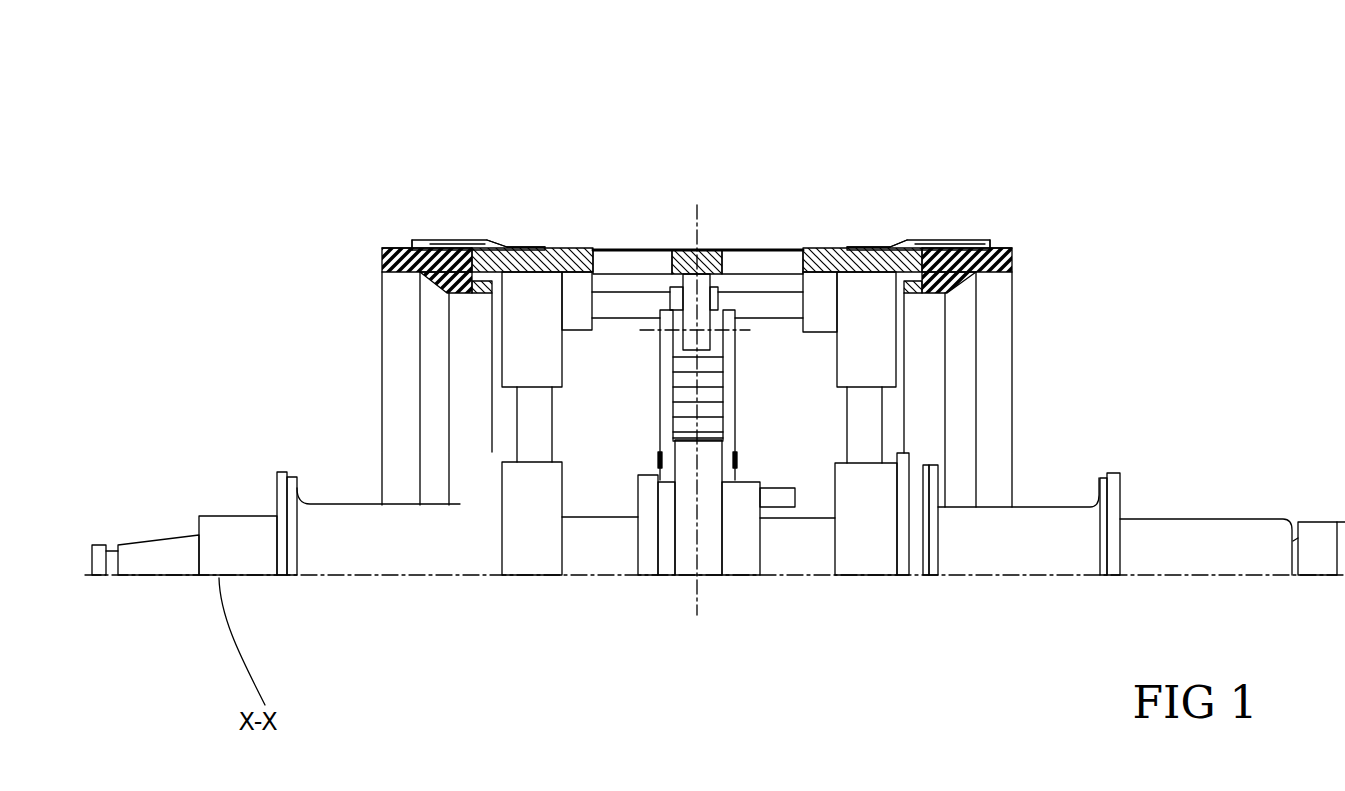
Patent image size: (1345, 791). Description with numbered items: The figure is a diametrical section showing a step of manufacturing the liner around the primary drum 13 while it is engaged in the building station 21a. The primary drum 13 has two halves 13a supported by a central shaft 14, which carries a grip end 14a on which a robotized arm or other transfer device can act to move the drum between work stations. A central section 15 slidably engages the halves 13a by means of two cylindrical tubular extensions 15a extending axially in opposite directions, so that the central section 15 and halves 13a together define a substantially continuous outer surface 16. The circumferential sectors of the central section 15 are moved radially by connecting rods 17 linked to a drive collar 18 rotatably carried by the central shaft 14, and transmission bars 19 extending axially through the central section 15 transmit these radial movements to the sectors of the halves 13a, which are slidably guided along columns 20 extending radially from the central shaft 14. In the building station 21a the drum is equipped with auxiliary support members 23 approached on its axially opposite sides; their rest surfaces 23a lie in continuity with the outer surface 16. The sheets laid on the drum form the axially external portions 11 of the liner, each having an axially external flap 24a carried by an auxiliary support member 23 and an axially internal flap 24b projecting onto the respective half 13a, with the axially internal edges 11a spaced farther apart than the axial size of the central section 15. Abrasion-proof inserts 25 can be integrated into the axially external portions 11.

The axially external portions of liner 11 is at (449, 228).
The axially internal edges 11a is at (537, 245).
The primary drum 13 is at (1037, 380).
The halves of primary drum 13a is at (577, 249).
The central shaft 14 is at (232, 530).
The grip end 14a is at (142, 537).
The central section 15 is at (688, 249).
The cylindrical tubular extensions 15a is at (638, 249).
The outer surface 16 is at (820, 250).
The connecting rods 17 is at (728, 412).
The drive collar 18 is at (712, 472).
The transmission bars 19 is at (630, 293).
The columns 20 is at (535, 437).
The building station 21a is at (255, 247).
The auxiliary support members 23 is at (382, 258).
The rest surfaces 23a is at (407, 247).
The axially external flap 24a is at (422, 240).
The axially internal flap 24b is at (527, 243).
The abrasion-proof inserts 25 is at (407, 245).